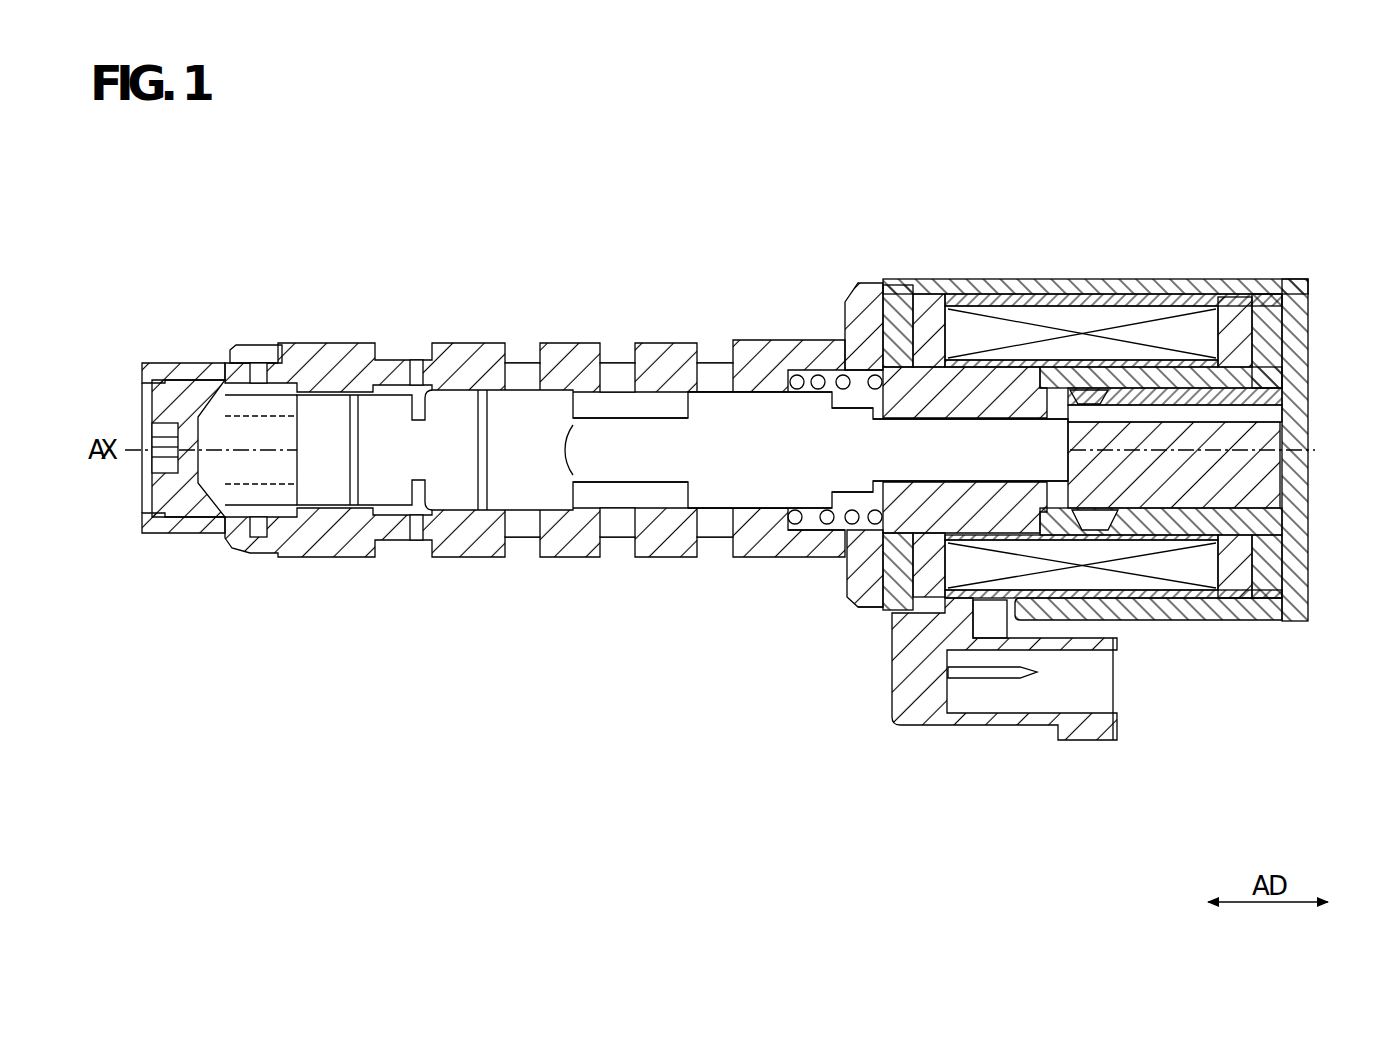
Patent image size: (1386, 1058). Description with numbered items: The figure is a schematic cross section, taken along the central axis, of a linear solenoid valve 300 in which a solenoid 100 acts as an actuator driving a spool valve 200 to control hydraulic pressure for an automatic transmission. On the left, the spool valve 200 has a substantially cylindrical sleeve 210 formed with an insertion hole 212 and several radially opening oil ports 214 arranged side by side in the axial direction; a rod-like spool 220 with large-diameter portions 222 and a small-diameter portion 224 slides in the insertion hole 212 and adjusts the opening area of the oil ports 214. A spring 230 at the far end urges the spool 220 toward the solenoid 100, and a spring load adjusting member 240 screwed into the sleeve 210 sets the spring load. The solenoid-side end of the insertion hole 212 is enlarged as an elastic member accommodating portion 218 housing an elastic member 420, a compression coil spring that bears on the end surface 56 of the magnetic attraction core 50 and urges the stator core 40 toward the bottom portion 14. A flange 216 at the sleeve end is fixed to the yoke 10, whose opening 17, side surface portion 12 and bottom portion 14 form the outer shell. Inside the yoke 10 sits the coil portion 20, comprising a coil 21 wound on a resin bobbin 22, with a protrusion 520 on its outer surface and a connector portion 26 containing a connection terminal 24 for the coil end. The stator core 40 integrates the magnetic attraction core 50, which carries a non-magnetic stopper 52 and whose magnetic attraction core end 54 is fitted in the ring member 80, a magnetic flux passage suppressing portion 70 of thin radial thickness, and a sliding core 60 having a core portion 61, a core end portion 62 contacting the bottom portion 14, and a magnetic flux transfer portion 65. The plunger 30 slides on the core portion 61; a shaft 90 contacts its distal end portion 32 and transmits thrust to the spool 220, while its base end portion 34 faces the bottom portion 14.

The linear solenoid valve 300 is at (277, 212).
The spool valve 200 is at (848, 770).
The solenoid 100 is at (1320, 770).
The spring load adjusting member 240 is at (181, 373).
The spring 230 is at (236, 423).
The sleeve 210 is at (462, 358).
The insertion hole 212 is at (332, 418).
The oil ports 214 is at (720, 565).
The large-diameter portions 222 is at (523, 420).
The small-diameter portion 224 is at (615, 430).
The spool 220 is at (708, 423).
The elastic member accommodating portion 218 is at (780, 398).
The end surface 56 is at (837, 370).
The elastic member 420 is at (828, 530).
The opening 17 is at (845, 300).
The shaft 90 is at (925, 470).
The flange 216 is at (874, 590).
The magnetic attraction core end 54 is at (892, 367).
The protrusion 520 is at (940, 300).
The ring member 80 is at (906, 300).
The yoke 10 is at (1312, 281).
The bottom portion 14 is at (1297, 368).
The stator core 40 is at (1232, 176).
The side surface portion 12 is at (1243, 292).
The magnetic attraction core 50 is at (1013, 400).
The stopper 52 is at (1043, 490).
The magnetic flux passage suppressing portion 70 is at (1100, 380).
The distal end portion 32 is at (1058, 384).
The sliding core 60 is at (1242, 335).
The magnetic flux transfer portion 65 is at (1273, 332).
The core end portion 62 is at (1257, 400).
The core portion 61 is at (1245, 412).
The plunger 30 is at (1250, 478).
The base end portion 34 is at (1280, 457).
The coil portion 20 is at (1312, 683).
The coil 21 is at (1158, 572).
The bobbin 22 is at (1237, 572).
The connector portion 26 is at (1128, 741).
The connection terminal 24 is at (1007, 678).